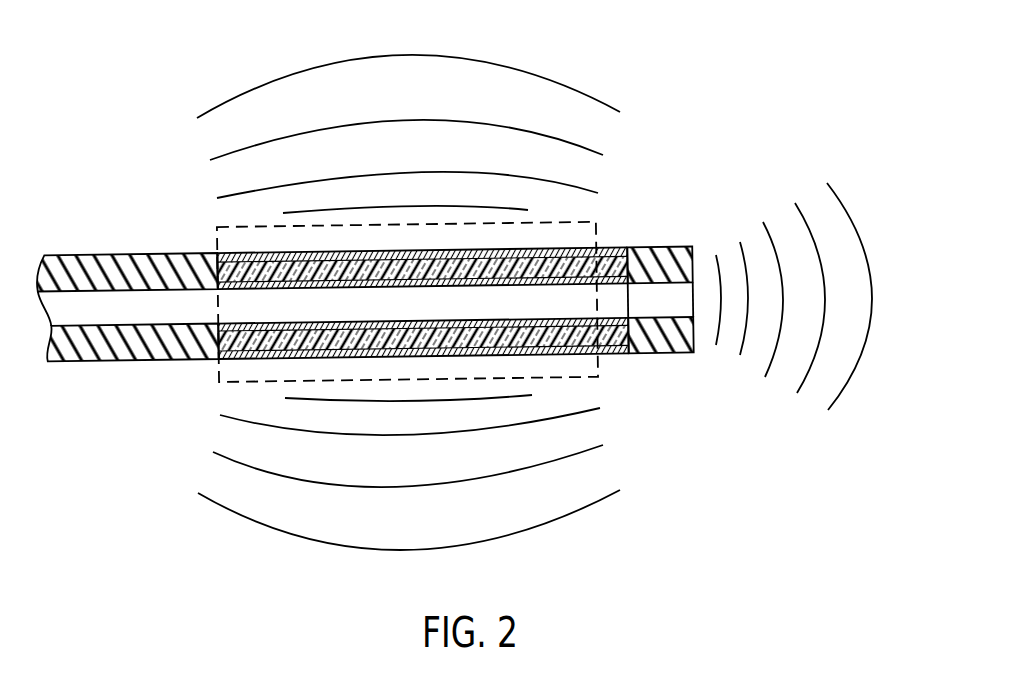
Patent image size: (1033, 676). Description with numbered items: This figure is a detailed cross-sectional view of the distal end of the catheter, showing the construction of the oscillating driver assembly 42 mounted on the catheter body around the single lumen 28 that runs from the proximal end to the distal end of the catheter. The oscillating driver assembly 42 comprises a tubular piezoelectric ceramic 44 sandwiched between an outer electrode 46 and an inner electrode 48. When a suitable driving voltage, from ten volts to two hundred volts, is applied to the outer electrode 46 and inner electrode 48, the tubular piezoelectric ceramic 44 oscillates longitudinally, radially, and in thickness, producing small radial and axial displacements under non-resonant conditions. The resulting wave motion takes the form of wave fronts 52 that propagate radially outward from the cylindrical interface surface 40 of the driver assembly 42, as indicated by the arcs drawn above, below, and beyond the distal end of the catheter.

The lumen 28 is at (92, 308).
The interface surface 40 is at (613, 355).
The oscillating driver assembly 42 is at (653, 217).
The tubular piezoelectric ceramic 44 is at (230, 358).
The outer electrode 46 is at (262, 352).
The inner electrode 48 is at (326, 332).
The wave fronts 52 is at (512, 210).